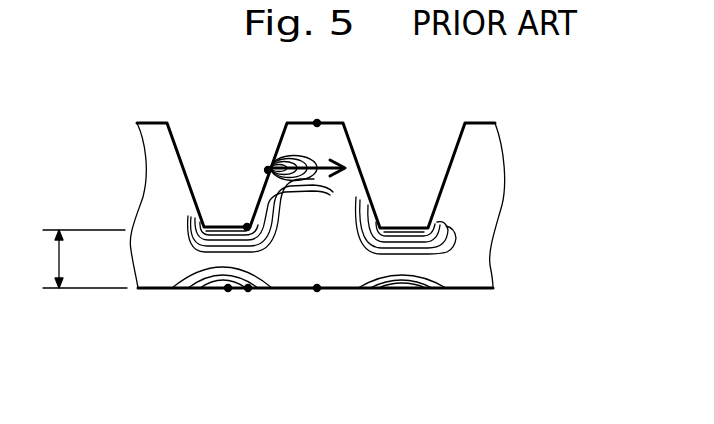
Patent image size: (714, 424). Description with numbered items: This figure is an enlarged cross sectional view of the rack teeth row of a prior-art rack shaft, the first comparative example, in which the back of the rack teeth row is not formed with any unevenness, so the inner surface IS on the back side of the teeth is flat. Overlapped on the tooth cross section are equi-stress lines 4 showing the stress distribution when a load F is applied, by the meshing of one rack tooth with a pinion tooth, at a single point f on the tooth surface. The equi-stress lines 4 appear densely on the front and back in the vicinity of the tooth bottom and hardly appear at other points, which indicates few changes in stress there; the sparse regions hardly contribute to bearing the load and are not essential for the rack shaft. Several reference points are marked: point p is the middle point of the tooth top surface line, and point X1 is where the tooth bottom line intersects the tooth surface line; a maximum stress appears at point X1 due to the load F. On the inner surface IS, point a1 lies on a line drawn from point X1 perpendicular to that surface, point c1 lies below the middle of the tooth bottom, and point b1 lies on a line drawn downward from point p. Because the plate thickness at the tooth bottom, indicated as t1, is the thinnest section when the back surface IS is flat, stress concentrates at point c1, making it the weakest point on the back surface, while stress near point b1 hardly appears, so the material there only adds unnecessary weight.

The equi-stress lines 4 is at (192, 273).
The inner surface IS is at (480, 288).
The thickness between tooth bottom and inner surface t1 is at (85, 259).
The load F is at (306, 156).
The point on the tooth surface f is at (268, 170).
The middle point of the tooth top surface line p is at (317, 123).
The point X1 is at (247, 227).
The point a1 is at (248, 288).
The point b1 is at (317, 288).
The point c1 is at (228, 288).